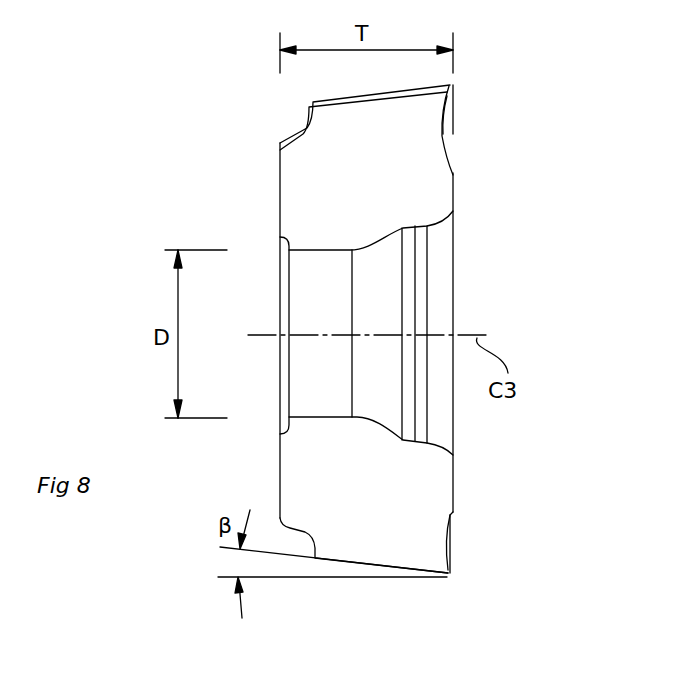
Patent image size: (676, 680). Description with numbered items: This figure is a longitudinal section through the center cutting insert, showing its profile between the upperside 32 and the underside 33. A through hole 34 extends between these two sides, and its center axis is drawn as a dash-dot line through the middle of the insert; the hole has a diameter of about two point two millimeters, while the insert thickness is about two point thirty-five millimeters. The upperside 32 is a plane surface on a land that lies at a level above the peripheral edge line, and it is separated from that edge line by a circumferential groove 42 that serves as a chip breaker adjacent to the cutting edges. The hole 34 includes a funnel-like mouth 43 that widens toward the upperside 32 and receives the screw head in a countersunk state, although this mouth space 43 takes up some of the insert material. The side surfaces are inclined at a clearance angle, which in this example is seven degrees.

The upperside 32 is at (453, 193).
The underside 33 is at (278, 198).
The through hole 34 is at (317, 290).
The circumferential groove 42 is at (445, 132).
The funnel-like mouth 43 is at (437, 230).